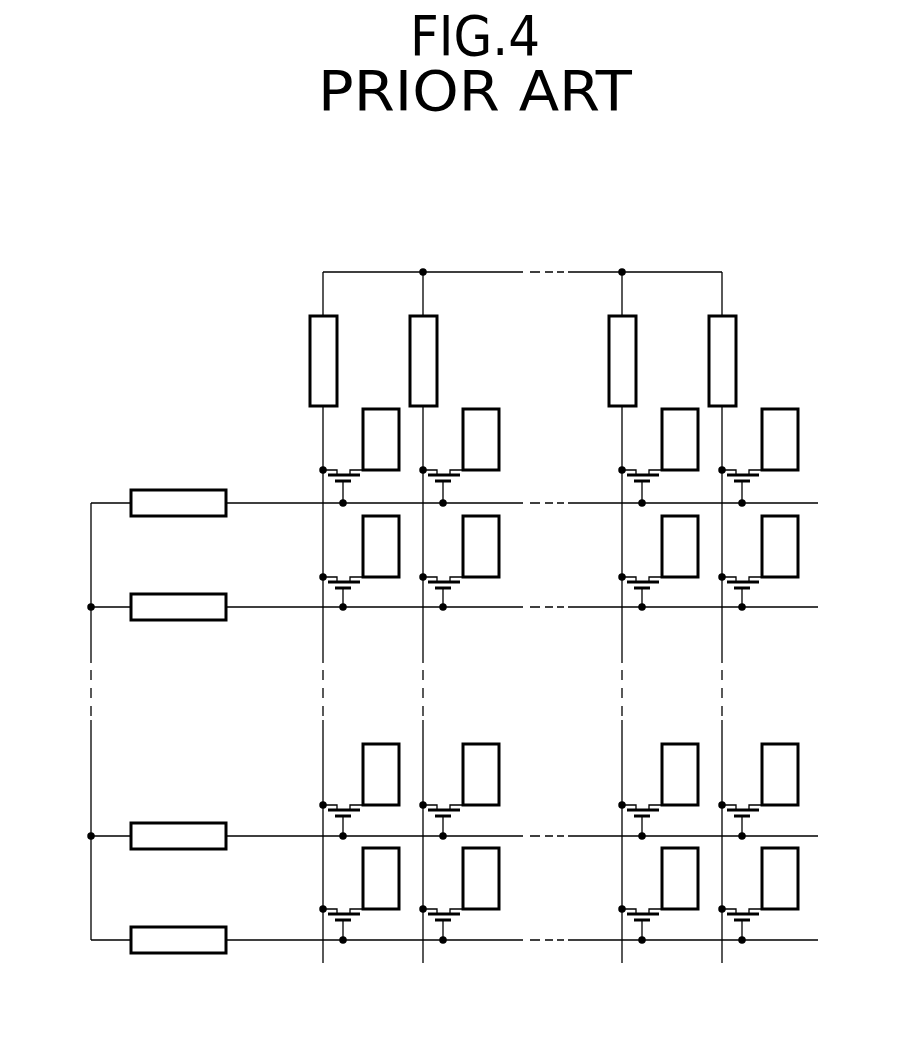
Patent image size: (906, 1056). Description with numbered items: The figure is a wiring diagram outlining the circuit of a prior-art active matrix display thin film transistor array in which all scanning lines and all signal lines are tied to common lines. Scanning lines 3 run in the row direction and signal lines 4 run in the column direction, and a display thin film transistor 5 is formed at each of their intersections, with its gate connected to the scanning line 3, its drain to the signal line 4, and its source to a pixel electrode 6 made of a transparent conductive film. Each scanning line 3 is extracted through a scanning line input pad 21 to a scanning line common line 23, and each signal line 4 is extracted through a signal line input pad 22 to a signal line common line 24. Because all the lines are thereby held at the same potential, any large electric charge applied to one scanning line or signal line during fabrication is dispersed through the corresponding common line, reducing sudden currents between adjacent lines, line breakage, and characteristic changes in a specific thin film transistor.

The scanning line 3 is at (255, 500).
The signal line 4 is at (323, 423).
The display thin film transistor 5 is at (757, 480).
The pixel electrode 6 is at (785, 435).
The scanning line input pad 21 is at (180, 495).
The signal line input pad 22 is at (322, 352).
The scanning line common line 23 is at (90, 548).
The signal line common line 24 is at (470, 271).